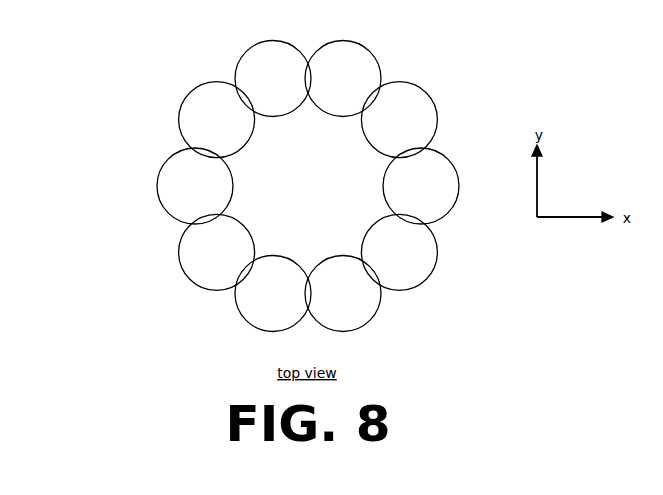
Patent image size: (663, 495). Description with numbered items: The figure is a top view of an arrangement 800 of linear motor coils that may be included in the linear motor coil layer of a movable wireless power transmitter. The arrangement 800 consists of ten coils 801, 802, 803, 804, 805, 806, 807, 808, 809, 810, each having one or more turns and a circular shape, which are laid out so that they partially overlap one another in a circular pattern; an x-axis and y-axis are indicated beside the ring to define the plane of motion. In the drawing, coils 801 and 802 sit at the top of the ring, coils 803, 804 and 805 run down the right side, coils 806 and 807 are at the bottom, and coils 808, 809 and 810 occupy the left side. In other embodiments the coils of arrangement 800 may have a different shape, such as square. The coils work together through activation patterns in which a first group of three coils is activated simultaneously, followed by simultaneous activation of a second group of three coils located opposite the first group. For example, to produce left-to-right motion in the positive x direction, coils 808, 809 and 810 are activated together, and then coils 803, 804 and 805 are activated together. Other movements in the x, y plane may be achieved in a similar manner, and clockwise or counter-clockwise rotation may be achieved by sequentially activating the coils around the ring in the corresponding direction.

The arrangement of linear motor coils 800 is at (89, 72).
The coil 801 is at (273, 79).
The coil 802 is at (343, 79).
The coil 803 is at (399, 120).
The coil 804 is at (421, 186).
The coil 805 is at (399, 252).
The coil 806 is at (343, 294).
The coil 807 is at (273, 294).
The coil 808 is at (217, 252).
The coil 809 is at (195, 186).
The coil 810 is at (217, 120).